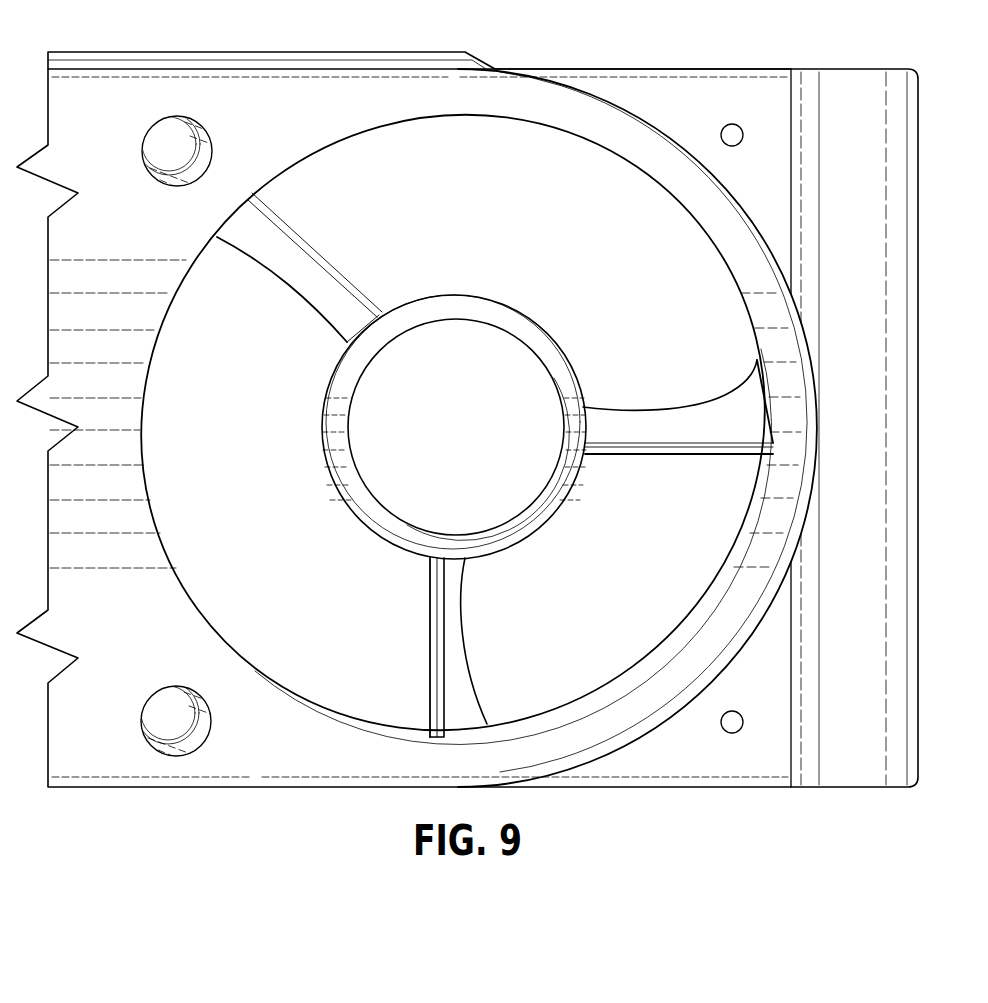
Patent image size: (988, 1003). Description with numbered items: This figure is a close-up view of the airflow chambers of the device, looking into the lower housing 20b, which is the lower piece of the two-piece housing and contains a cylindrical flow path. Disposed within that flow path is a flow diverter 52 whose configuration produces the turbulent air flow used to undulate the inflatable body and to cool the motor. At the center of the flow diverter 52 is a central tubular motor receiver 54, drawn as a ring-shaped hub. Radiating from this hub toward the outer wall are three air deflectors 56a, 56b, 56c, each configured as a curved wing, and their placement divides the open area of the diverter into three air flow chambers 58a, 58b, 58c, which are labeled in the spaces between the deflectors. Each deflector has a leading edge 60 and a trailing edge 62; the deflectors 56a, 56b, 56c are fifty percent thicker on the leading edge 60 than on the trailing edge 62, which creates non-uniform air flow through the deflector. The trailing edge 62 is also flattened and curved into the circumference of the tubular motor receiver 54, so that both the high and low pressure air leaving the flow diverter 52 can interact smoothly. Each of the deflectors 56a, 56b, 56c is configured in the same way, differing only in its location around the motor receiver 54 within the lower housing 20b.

The lower housing 20b is at (131, 95).
The flow diverter 52 is at (476, 126).
The central tubular motor receiver 54 is at (520, 502).
The air deflector 56a is at (450, 721).
The air deflector 56b is at (240, 223).
The air deflector 56c is at (723, 412).
The air flow chamber 58a is at (618, 589).
The air flow chamber 58b is at (245, 484).
The air flow chamber 58c is at (563, 242).
The leading edge 60 is at (430, 657).
The trailing edge 62 is at (463, 607).